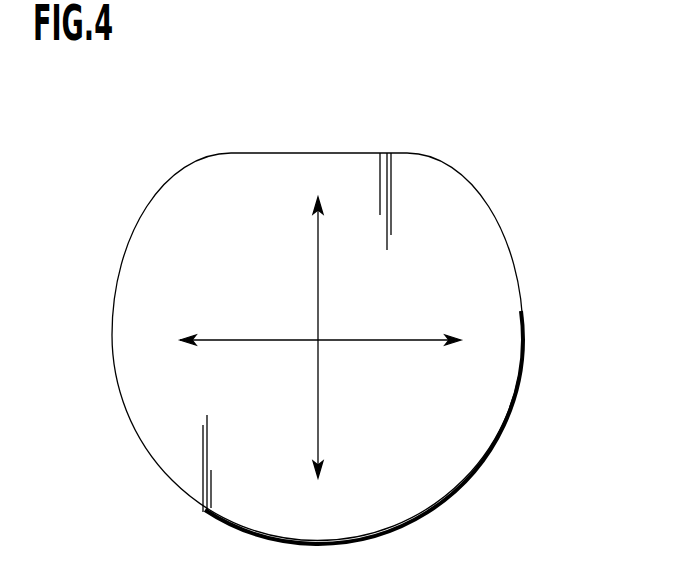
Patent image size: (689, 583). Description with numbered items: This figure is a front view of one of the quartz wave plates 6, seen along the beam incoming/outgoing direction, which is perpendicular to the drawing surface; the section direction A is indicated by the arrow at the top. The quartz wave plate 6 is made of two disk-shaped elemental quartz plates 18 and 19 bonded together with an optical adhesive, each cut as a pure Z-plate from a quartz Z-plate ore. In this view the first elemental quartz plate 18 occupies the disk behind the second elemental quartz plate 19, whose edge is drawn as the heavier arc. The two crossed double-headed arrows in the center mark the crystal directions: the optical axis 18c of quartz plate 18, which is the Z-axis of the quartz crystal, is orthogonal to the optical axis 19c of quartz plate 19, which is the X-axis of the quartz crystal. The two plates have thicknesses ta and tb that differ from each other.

The section direction A is at (320, 129).
The quartz wave plate 6 is at (406, 141).
The elemental quartz plate 18 is at (455, 203).
The elemental quartz plate 19 is at (450, 450).
The optical axis 19c is at (403, 340).
The optical axis 18c is at (318, 428).